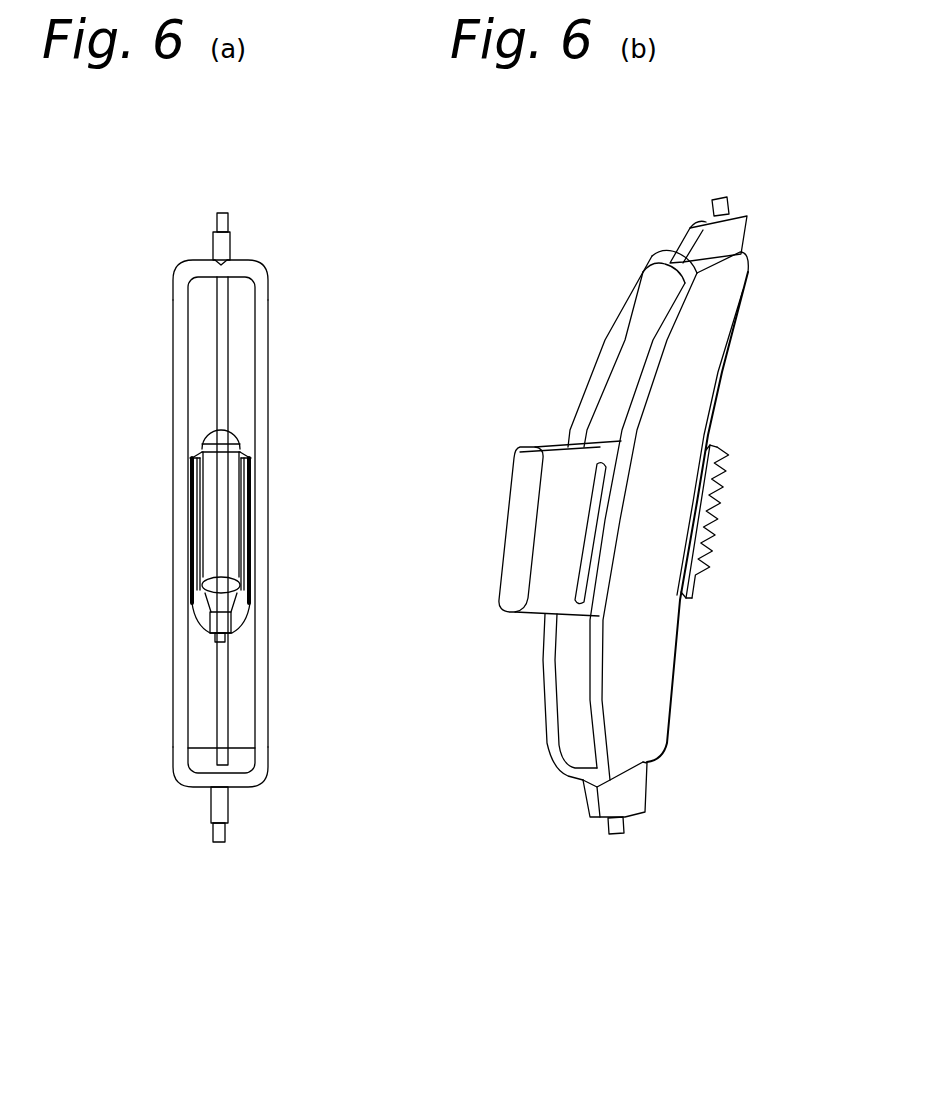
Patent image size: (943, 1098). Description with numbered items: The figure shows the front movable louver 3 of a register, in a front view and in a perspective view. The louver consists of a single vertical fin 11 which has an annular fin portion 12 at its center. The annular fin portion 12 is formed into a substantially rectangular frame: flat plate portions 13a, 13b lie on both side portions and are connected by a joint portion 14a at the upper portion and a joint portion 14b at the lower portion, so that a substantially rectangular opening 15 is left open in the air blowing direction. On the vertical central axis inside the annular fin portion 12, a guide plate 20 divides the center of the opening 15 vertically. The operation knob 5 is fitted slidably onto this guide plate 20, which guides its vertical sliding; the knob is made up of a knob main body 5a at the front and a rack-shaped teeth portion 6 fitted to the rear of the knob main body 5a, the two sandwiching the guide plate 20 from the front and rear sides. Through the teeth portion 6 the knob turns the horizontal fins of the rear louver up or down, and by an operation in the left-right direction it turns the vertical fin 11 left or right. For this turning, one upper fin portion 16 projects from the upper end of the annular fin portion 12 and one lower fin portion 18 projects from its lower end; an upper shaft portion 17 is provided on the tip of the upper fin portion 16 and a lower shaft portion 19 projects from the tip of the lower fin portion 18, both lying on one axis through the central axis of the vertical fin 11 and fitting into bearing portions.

In FIG. 6a, the front movable louver 3 is at (133, 285).
In FIG. 6b, the front movable louver 3 is at (580, 268).
In FIG. 6a, the operation knob 5 is at (255, 448).
In FIG. 6b, the operation knob 5 is at (528, 432).
In FIG. 6a, the knob main body 5a is at (262, 552).
In FIG. 6b, the knob main body 5a is at (513, 512).
In FIG. 6b, the teeth portion 6 is at (712, 520).
In FIG. 6a, the vertical fin 11 is at (153, 392).
In FIG. 6b, the vertical fin 11 is at (578, 358).
In FIG. 6a, the annular fin portion 12 is at (272, 330).
In FIG. 6a, the flat plate portion 13a is at (262, 498).
In FIG. 6b, the flat plate portion 13a is at (703, 373).
In FIG. 6a, the flat plate portion 13b is at (178, 501).
In FIG. 6b, the flat plate portion 13b is at (585, 395).
In FIG. 6a, the joint portion 14a is at (237, 267).
In FIG. 6b, the joint portion 14a is at (665, 262).
In FIG. 6a, the joint portion 14b is at (208, 765).
In FIG. 6b, the joint portion 14b is at (585, 757).
In FIG. 6a, the opening 15 is at (203, 352).
In FIG. 6b, the opening 15 is at (578, 712).
In FIG. 6a, the upper fin portion 16 is at (213, 246).
In FIG. 6b, the upper fin portion 16 is at (730, 238).
In FIG. 6a, the upper shaft portion 17 is at (224, 213).
In FIG. 6b, the upper shaft portion 17 is at (712, 200).
In FIG. 6a, the lower fin portion 18 is at (235, 803).
In FIG. 6b, the lower fin portion 18 is at (633, 785).
In FIG. 6a, the lower shaft portion 19 is at (228, 835).
In FIG. 6b, the lower shaft portion 19 is at (627, 828).
In FIG. 6a, the guide plate 20 is at (222, 370).